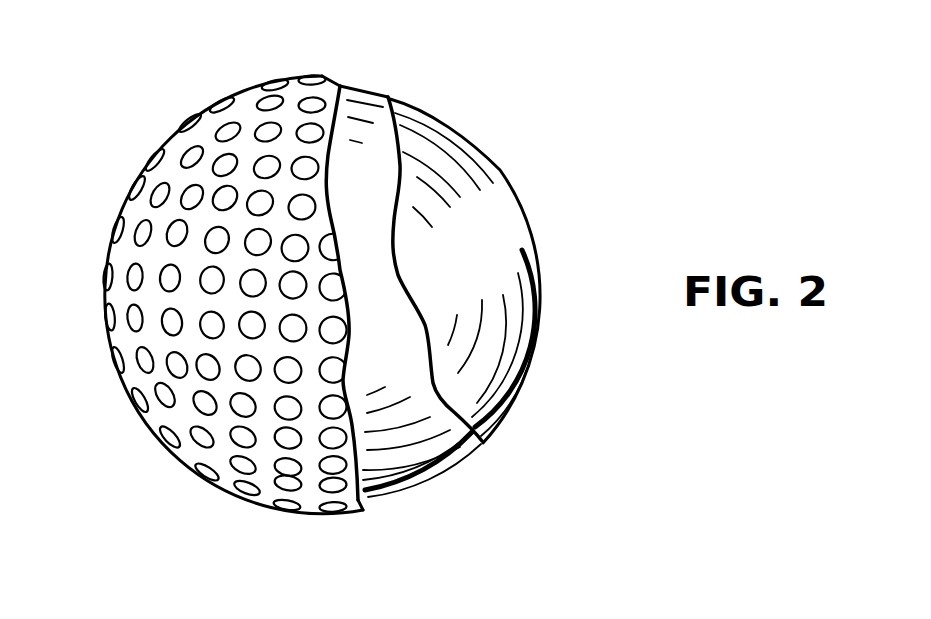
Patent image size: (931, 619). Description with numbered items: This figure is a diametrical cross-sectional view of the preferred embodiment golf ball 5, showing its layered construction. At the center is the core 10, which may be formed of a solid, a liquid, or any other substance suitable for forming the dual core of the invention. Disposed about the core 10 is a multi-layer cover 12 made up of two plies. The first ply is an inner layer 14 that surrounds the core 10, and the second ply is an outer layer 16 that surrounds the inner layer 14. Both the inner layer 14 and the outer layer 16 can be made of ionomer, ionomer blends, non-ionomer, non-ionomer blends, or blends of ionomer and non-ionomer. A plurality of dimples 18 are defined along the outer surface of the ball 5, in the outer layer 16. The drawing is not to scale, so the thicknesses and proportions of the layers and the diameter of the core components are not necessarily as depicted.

The golf ball 5 is at (556, 179).
The core 10 is at (497, 403).
The multi-layer cover 12 is at (392, 87).
The inner layer 14 is at (425, 477).
The outer layer 16 is at (232, 475).
The dimples 18 is at (148, 152).